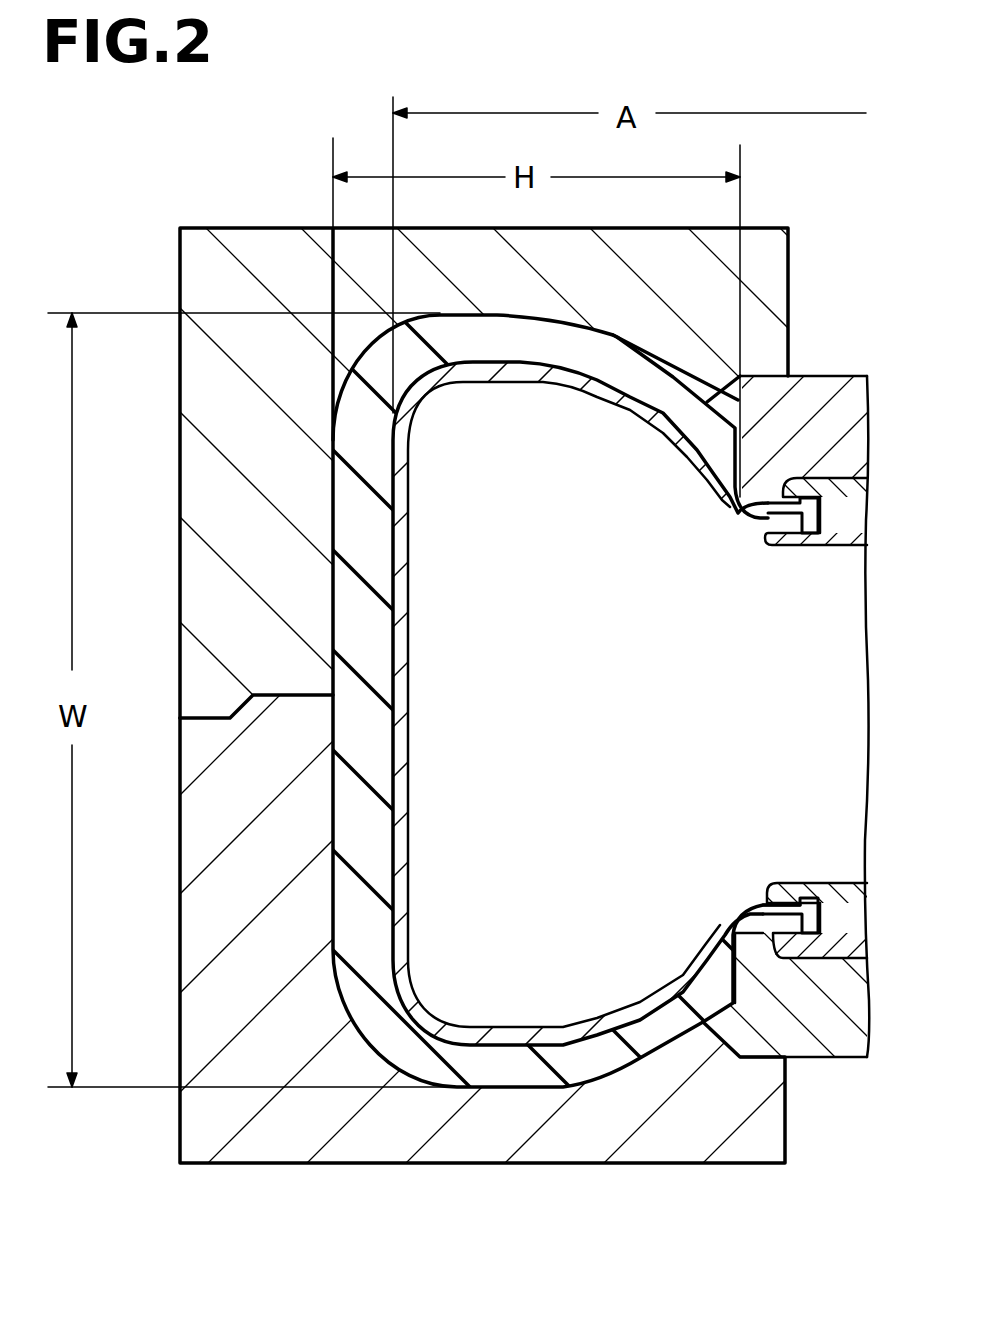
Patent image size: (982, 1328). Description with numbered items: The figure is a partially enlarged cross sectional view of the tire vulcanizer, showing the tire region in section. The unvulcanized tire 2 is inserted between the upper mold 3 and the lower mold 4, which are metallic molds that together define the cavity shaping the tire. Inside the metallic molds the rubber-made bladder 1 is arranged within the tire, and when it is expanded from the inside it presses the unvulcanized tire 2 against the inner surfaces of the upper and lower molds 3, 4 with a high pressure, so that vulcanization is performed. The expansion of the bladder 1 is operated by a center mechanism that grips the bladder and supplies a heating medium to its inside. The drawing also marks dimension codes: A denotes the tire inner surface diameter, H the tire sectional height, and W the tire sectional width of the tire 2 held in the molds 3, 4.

The bladder 1 is at (547, 1037).
The unvulcanized tire 2 is at (628, 1060).
The upper mold 3 is at (237, 292).
The lower mold 4 is at (253, 992).